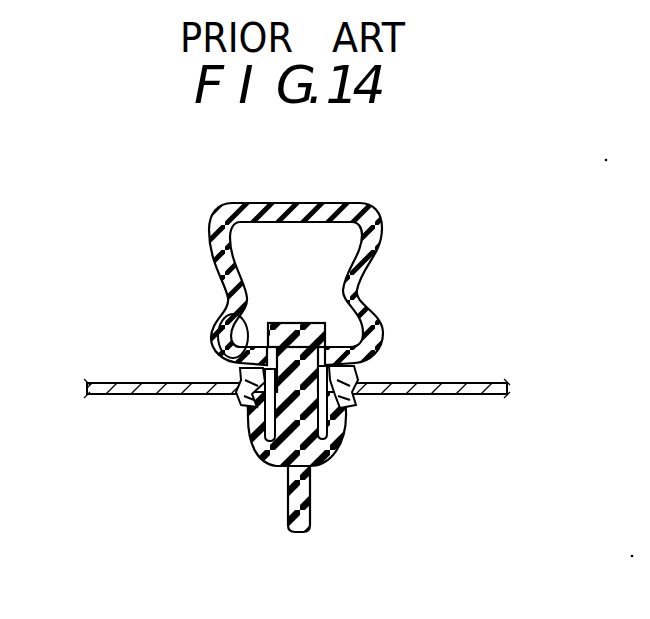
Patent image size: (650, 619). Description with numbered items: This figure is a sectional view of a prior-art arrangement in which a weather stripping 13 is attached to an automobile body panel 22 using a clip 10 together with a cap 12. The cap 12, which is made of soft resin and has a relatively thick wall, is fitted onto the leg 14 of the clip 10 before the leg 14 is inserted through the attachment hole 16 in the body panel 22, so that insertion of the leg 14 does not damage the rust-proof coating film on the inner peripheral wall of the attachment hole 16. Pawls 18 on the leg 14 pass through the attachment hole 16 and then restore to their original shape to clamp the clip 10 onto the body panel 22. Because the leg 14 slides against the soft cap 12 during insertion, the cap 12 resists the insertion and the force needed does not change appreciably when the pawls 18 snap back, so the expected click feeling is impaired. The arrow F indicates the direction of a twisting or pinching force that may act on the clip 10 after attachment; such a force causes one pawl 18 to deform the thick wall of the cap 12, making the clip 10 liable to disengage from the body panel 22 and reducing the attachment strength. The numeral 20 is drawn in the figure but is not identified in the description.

The clip 10 is at (252, 492).
The cap 12 is at (242, 372).
The weather stripping 13 is at (328, 203).
The leg 14 is at (306, 492).
The attachment hole 16 is at (348, 401).
The pawls 18 is at (256, 428).
The sealing lip / ring 20 is at (224, 320).
The body panel 22 is at (106, 381).
The arrow F is at (396, 307).